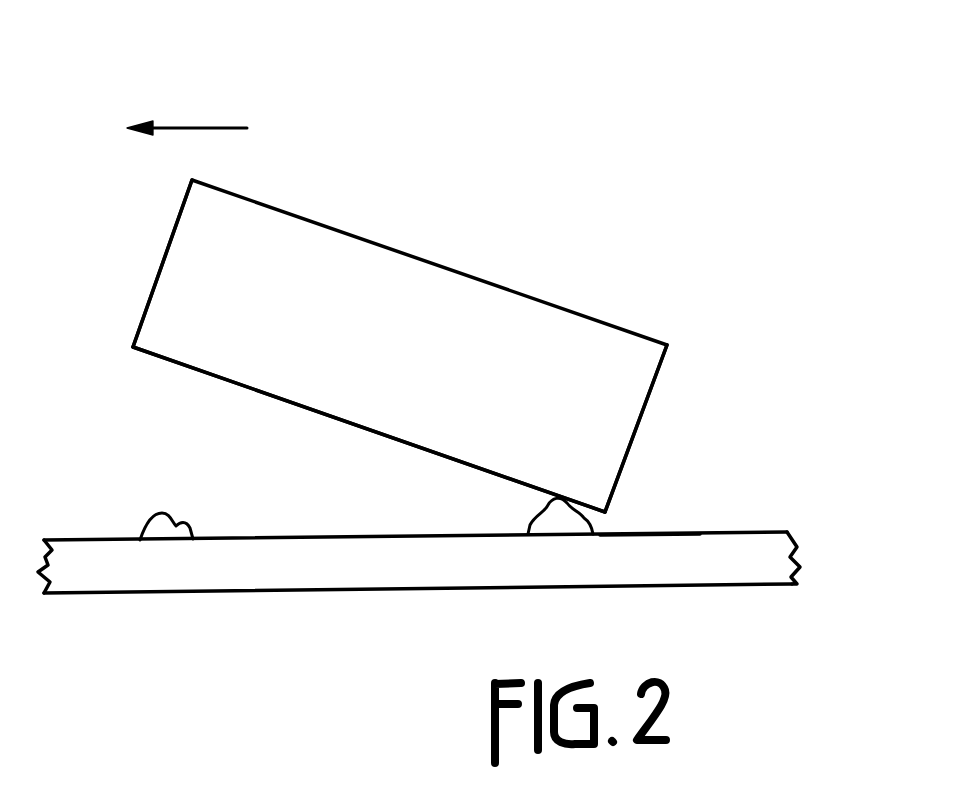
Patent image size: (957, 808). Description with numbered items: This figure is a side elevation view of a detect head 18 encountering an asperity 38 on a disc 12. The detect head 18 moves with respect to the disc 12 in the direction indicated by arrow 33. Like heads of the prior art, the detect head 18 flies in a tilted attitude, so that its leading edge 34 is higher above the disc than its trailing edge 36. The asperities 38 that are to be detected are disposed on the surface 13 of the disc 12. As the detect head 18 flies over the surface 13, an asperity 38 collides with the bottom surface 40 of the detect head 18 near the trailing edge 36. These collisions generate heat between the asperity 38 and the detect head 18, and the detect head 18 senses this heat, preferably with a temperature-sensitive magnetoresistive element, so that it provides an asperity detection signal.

The disc 12 is at (800, 567).
The surface 13 is at (693, 532).
The detect head 18 is at (512, 283).
The arrow 33 is at (200, 127).
The leading edge 34 is at (152, 288).
The trailing edge 36 is at (653, 393).
The asperity 38 is at (182, 532).
The bottom surface 40 is at (392, 440).